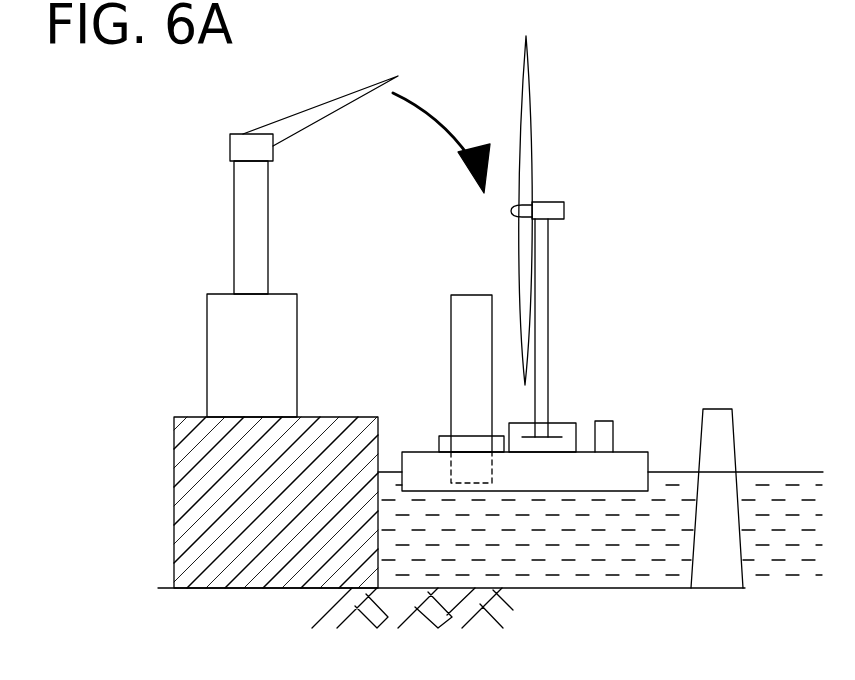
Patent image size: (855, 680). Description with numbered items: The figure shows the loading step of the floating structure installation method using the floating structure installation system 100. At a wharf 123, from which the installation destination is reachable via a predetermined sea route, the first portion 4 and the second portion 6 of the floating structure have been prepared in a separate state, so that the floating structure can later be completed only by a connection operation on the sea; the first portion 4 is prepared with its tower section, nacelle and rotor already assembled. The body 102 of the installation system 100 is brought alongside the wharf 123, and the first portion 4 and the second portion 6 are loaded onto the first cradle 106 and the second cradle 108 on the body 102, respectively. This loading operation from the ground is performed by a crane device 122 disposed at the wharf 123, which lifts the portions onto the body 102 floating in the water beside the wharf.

The first portion 4 is at (470, 283).
The second portion 6 is at (558, 192).
The floating structure installation system 100 is at (539, 405).
The body 102 is at (637, 448).
The first cradle 106 is at (439, 448).
The second cradle 108 is at (567, 423).
The crane device 122 is at (282, 292).
The wharf 123 is at (328, 417).